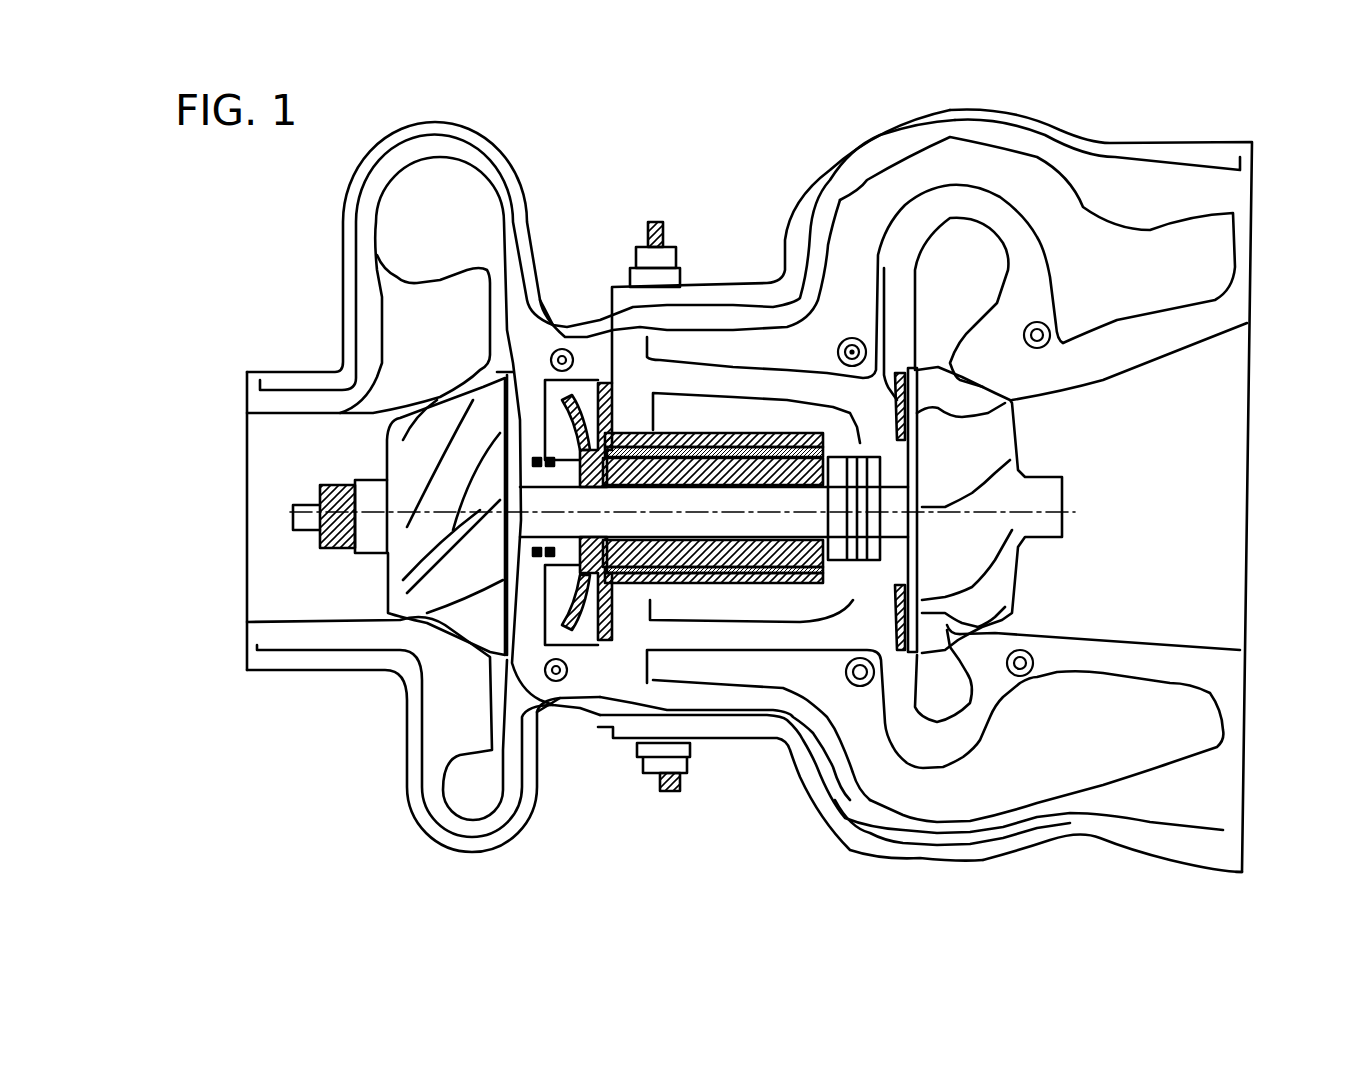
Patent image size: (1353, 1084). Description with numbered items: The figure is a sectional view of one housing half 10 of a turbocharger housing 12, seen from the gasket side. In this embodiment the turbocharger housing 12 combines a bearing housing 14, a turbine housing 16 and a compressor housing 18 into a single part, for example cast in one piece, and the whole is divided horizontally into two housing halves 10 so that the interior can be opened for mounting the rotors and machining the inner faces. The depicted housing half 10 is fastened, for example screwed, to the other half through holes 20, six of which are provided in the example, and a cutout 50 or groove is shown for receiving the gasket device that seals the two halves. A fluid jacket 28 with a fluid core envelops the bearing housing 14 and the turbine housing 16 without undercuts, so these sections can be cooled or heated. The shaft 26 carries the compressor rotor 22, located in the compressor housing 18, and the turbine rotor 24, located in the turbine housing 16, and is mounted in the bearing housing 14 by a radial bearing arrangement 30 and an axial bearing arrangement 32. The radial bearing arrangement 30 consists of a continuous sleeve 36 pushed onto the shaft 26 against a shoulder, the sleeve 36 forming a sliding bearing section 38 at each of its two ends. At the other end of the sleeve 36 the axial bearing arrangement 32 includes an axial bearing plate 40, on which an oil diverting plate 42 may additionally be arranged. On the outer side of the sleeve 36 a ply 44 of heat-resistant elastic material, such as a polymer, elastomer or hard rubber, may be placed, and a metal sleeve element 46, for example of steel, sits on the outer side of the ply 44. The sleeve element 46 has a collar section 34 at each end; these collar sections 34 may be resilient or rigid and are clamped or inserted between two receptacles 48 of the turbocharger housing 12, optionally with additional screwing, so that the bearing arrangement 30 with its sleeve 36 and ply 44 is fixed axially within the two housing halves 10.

The housing half 10 is at (1237, 207).
The turbocharger housing 12 is at (1247, 136).
The bearing housing 14 is at (738, 272).
The turbine housing 16 is at (1174, 150).
The compressor housing 18 is at (537, 165).
The holes 20 is at (564, 349).
The compressor rotor 22 is at (398, 457).
The turbine rotor 24 is at (1012, 440).
The shaft 26 is at (733, 525).
The fluid jacket 28 is at (1222, 263).
The radial bearing arrangement 30 is at (792, 600).
The axial bearing arrangement 32 is at (547, 600).
The collar section 34 is at (616, 582).
The sleeve 36 is at (717, 569).
The sliding bearing section 38 is at (635, 585).
The axial bearing plate 40 is at (600, 365).
The oil diverting plate 42 is at (581, 548).
The ply 44 is at (688, 570).
The sleeve element 46 is at (765, 433).
The receptacles 48 is at (637, 417).
The cutout 50 is at (557, 312).